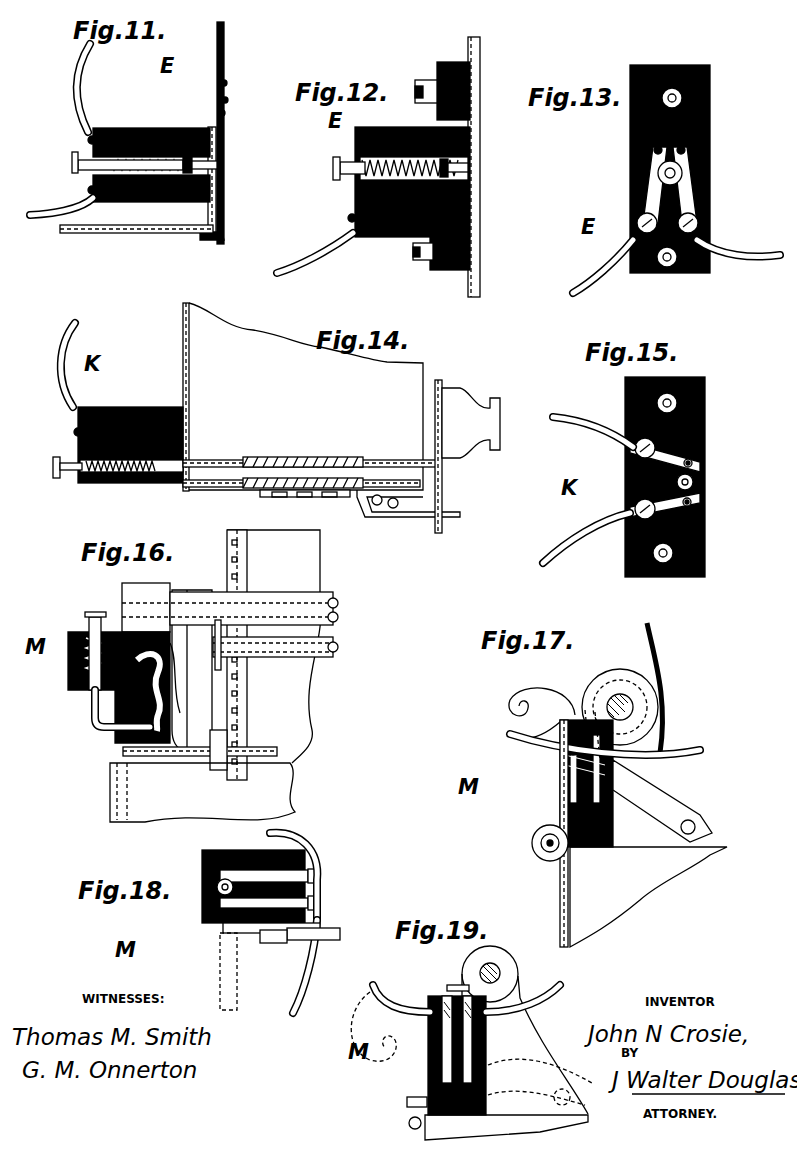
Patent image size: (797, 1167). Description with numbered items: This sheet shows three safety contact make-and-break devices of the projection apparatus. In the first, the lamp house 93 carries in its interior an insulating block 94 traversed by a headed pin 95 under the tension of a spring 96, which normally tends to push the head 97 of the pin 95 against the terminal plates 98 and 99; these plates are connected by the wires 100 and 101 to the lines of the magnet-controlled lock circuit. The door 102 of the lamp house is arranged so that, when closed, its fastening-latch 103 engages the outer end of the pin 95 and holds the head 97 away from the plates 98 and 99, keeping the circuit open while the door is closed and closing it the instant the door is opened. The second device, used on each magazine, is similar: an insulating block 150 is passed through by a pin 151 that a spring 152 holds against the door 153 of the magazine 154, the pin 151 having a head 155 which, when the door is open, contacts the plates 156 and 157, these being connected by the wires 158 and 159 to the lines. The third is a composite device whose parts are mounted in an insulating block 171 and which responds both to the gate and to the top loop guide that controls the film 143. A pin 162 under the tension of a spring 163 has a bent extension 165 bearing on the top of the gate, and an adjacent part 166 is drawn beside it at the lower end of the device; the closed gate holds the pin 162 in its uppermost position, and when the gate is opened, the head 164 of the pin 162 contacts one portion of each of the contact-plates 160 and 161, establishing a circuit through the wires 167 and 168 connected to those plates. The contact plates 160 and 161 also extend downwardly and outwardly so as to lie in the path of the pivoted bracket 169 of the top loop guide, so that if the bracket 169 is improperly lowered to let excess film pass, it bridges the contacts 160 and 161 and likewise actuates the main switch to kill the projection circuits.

In FIG. 11, the lamp house 93 is at (137, 233).
In FIG. 11, the insulating block 94 is at (143, 128).
In FIG. 12, the insulating block 94 is at (395, 238).
In FIG. 13, the insulating block 94 is at (710, 153).
In FIG. 11, the headed pin 95 is at (90, 170).
In FIG. 12, the headed pin 95 is at (350, 176).
In FIG. 13, the headed pin 95 is at (708, 185).
In FIG. 11, the spring 96 is at (213, 200).
In FIG. 12, the spring 96 is at (473, 202).
In FIG. 11, the head 97 is at (73, 157).
In FIG. 12, the head 97 is at (338, 158).
In FIG. 13, the head 97 is at (642, 167).
In FIG. 11, the terminal plate 98 is at (90, 150).
In FIG. 13, the terminal plate 98 is at (634, 195).
In FIG. 11, the terminal plate 99 is at (90, 190).
In FIG. 12, the terminal plate 99 is at (357, 196).
In FIG. 13, the terminal plate 99 is at (700, 204).
In FIG. 11, the wire 100 is at (84, 78).
In FIG. 13, the wire 100 is at (618, 253).
In FIG. 11, the wire 101 is at (52, 218).
In FIG. 12, the wire 101 is at (318, 254).
In FIG. 13, the wire 101 is at (743, 254).
In FIG. 11, the door 102 is at (224, 52).
In FIG. 12, the door 102 is at (476, 120).
In FIG. 11, the fastening-latch 103 is at (217, 180).
In FIG. 12, the fastening-latch 103 is at (480, 172).
In FIG. 16, the film 143 is at (303, 716).
In FIG. 17, the film 143 is at (659, 650).
In FIG. 14, the insulating block 150 is at (138, 397).
In FIG. 15, the insulating block 150 is at (705, 437).
In FIG. 14, the pin 151 is at (72, 478).
In FIG. 14, the spring 152 is at (130, 483).
In FIG. 14, the door 153 is at (435, 428).
In FIG. 14, the magazine 154 is at (183, 353).
In FIG. 14, the head 155 is at (58, 478).
In FIG. 15, the head 155 is at (696, 484).
In FIG. 15, the plate 156 is at (696, 463).
In FIG. 14, the plate 157 is at (75, 427).
In FIG. 15, the plate 157 is at (695, 503).
In FIG. 15, the wire 158 is at (596, 426).
In FIG. 14, the wire 159 is at (63, 331).
In FIG. 15, the wire 159 is at (568, 538).
In FIG. 17, the contact-plate 160 is at (610, 790).
In FIG. 18, the contact-plate 160 is at (322, 877).
In FIG. 19, the contact-plate 160 is at (478, 1047).
In FIG. 16, the contact-plate 161 is at (88, 627).
In FIG. 17, the contact-plate 161 is at (567, 790).
In FIG. 18, the contact-plate 161 is at (322, 903).
In FIG. 19, the contact-plate 161 is at (447, 1047).
In FIG. 16, the pin 162 is at (117, 706).
In FIG. 18, the pin 162 is at (223, 935).
In FIG. 19, the pin 162 is at (467, 993).
In FIG. 16, the spring 163 is at (70, 663).
In FIG. 16, the head 164 is at (91, 612).
In FIG. 17, the head 164 is at (587, 707).
In FIG. 18, the head 164 is at (218, 890).
In FIG. 19, the head 164 is at (457, 988).
In FIG. 16, the bent extension 165 is at (120, 773).
In FIG. 17, the bent extension 165 is at (547, 831).
In FIG. 18, the bent extension 165 is at (283, 945).
In FIG. 19, the bent extension 165 is at (408, 1103).
In FIG. 16, the bar 166 is at (177, 803).
In FIG. 17, the bar 166 is at (560, 890).
In FIG. 18, the bar 166 is at (327, 938).
In FIG. 19, the bar 166 is at (410, 1125).
In FIG. 17, the wire 167 is at (673, 756).
In FIG. 18, the wire 167 is at (298, 834).
In FIG. 19, the wire 167 is at (550, 973).
In FIG. 16, the wire 168 is at (143, 730).
In FIG. 17, the wire 168 is at (532, 738).
In FIG. 18, the wire 168 is at (303, 993).
In FIG. 19, the wire 168 is at (413, 995).
In FIG. 16, the pivoted bracket 169 is at (200, 688).
In FIG. 17, the pivoted bracket 169 is at (643, 802).
In FIG. 19, the pivoted bracket 169 is at (543, 1067).
In FIG. 16, the insulating block 171 is at (113, 717).
In FIG. 18, the insulating block 171 is at (247, 842).